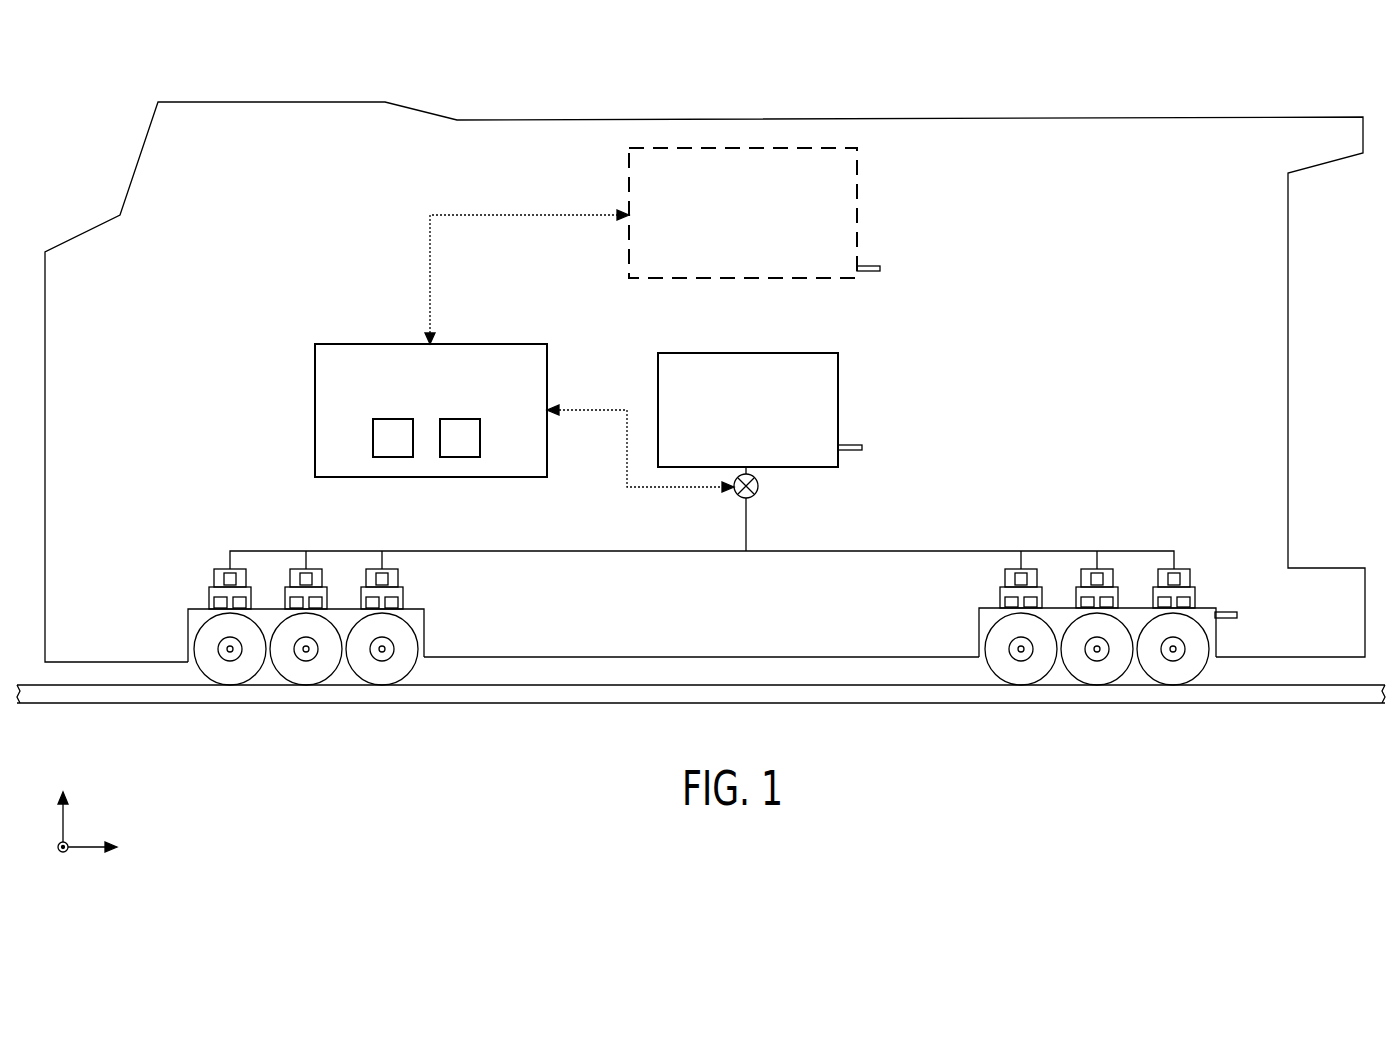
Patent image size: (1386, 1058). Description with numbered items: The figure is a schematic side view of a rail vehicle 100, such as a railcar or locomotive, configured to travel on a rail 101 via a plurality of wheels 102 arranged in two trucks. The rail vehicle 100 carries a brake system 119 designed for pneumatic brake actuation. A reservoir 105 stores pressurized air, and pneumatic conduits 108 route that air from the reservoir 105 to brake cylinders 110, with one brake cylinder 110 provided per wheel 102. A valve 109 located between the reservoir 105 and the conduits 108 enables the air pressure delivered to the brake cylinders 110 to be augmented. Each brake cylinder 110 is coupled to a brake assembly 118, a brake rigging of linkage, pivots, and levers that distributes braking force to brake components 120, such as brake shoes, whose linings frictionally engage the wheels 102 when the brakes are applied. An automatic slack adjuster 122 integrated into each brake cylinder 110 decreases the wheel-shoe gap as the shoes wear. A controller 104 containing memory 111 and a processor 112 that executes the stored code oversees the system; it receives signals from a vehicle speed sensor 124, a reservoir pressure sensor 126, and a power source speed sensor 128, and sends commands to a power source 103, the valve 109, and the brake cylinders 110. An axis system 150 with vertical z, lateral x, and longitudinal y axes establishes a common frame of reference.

The rail vehicle 100 is at (1018, 117).
The rail 101 is at (1288, 703).
The wheels 102 is at (207, 640).
The power source 103 is at (759, 253).
The controller 104 is at (447, 408).
The reservoir 105 is at (764, 434).
The pneumatic conduits 108 is at (865, 551).
The valve 109 is at (758, 484).
The brake cylinders 110 is at (214, 576).
The memory 111 is at (393, 419).
The processor 112 is at (480, 437).
The brake assemblies 118 is at (209, 596).
The brake system 119 is at (1160, 381).
The brake components 120 is at (240, 604).
The automatic slack adjuster 122 is at (236, 580).
The vehicle speed sensor 124 is at (1225, 612).
The reservoir pressure sensor 126 is at (848, 445).
The power source speed sensor 128 is at (868, 272).
The axis system 150 is at (101, 817).